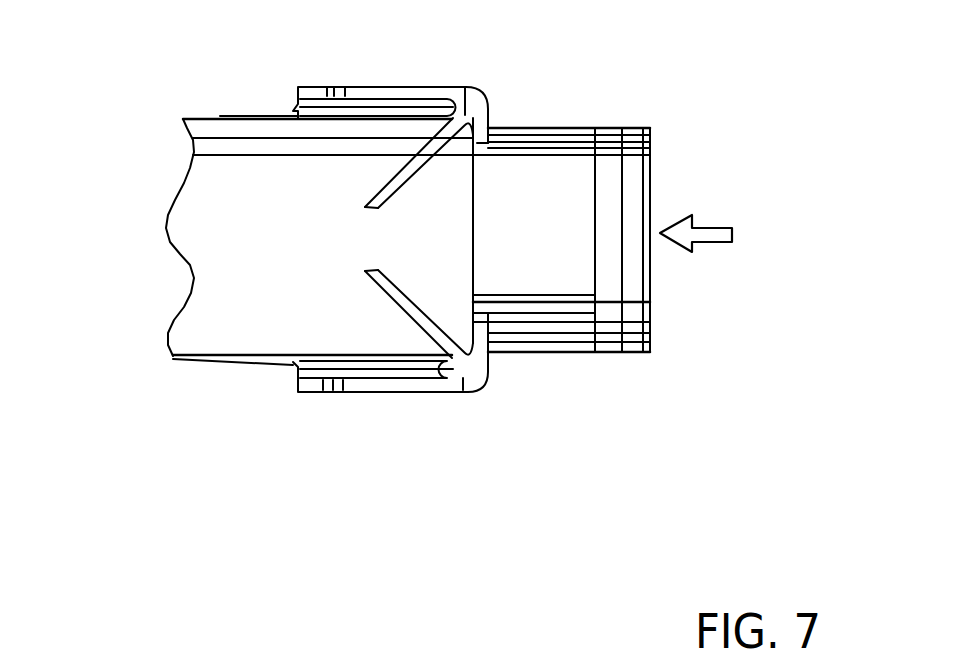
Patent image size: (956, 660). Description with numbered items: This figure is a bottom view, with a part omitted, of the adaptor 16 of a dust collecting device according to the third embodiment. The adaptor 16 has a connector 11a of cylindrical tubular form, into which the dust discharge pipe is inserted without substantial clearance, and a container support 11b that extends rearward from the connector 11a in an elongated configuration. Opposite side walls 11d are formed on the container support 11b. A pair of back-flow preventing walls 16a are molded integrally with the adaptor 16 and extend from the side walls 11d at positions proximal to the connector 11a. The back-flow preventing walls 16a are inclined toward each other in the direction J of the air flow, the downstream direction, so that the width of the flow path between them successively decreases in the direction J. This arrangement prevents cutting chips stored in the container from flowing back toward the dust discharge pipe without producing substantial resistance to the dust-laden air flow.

The connector 11a is at (537, 288).
The container support 11b is at (230, 288).
The side walls 11d is at (380, 92).
The adaptor 16 is at (503, 417).
The back-flow preventing walls 16a is at (393, 177).
The direction of the flow of air J is at (713, 233).